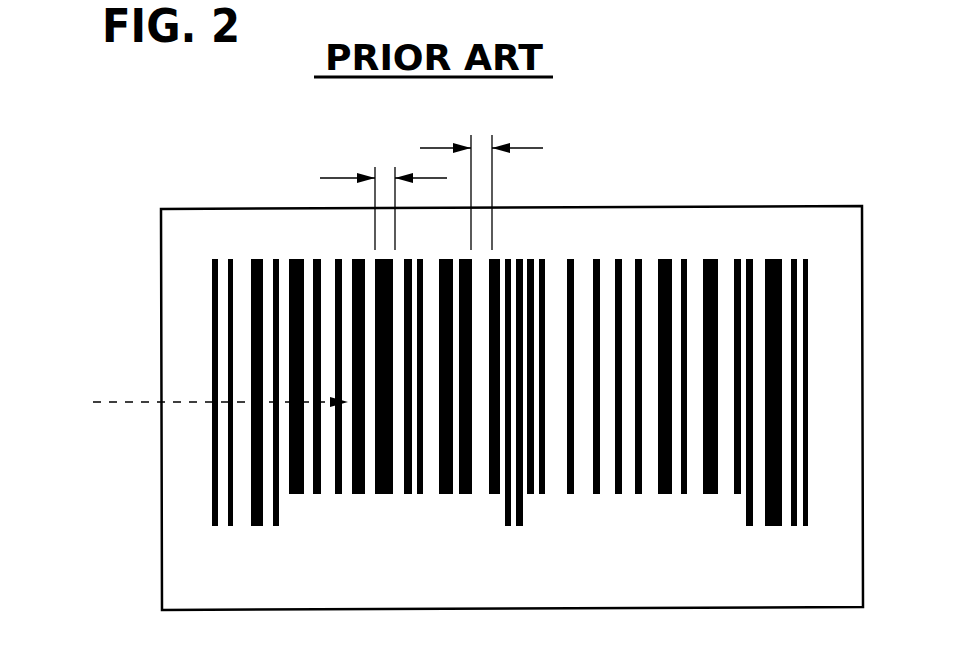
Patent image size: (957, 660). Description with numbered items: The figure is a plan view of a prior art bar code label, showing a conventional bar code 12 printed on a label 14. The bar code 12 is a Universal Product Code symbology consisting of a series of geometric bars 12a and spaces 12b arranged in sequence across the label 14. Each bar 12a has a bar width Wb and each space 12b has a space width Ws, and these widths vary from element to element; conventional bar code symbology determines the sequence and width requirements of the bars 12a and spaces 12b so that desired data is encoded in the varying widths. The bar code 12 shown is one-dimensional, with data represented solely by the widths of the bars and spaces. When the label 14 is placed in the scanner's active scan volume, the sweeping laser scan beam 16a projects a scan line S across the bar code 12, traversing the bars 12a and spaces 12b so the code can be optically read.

The bar code 12 is at (800, 315).
The bar 12a is at (257, 260).
The space 12b is at (283, 267).
The label 14 is at (807, 206).
The scan beam 16a is at (97, 402).
The scan line S is at (127, 405).
The bar width Wb is at (328, 178).
The space width Ws is at (536, 148).